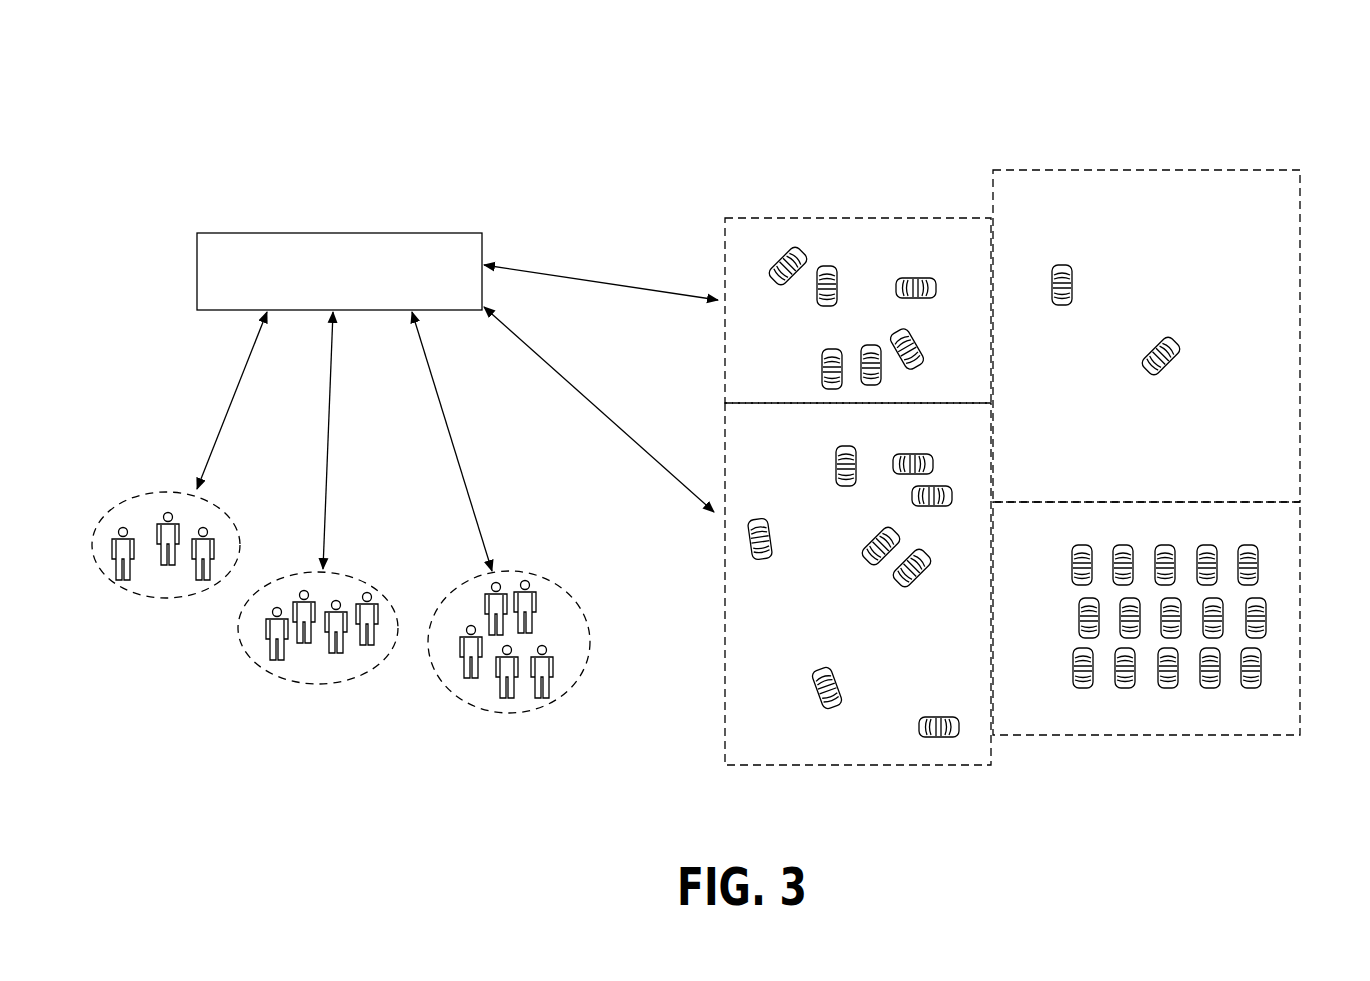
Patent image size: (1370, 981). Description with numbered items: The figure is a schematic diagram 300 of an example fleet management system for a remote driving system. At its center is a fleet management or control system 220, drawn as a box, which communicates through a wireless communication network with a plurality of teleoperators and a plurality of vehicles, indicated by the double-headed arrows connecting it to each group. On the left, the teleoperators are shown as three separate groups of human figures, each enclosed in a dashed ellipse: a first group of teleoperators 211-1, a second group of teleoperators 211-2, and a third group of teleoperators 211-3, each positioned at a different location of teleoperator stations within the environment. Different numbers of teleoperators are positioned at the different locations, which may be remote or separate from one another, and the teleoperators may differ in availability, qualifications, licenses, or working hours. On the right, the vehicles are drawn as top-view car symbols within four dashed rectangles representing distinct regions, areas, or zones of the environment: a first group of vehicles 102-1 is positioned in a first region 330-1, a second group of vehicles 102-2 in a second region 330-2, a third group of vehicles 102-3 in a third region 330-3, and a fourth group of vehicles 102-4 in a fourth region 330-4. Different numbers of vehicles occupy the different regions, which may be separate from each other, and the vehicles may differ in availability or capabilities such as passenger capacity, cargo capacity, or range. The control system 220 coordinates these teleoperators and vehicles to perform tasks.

The schematic diagram 300 is at (1266, 80).
The fleet management or control system 220 is at (324, 281).
The first group of teleoperators 211-1 is at (180, 602).
The second group of teleoperators 211-2 is at (323, 692).
The third group of teleoperators 211-3 is at (525, 720).
The first region 330-1 is at (828, 216).
The second region 330-2 is at (1098, 167).
The third region 330-3 is at (881, 768).
The fourth region 330-4 is at (1131, 740).
The first group of vehicles 102-1 is at (821, 330).
The second group of vehicles 102-2 is at (1107, 317).
The third group of vehicles 102-3 is at (823, 625).
The fourth group of vehicles 102-4 is at (1134, 717).